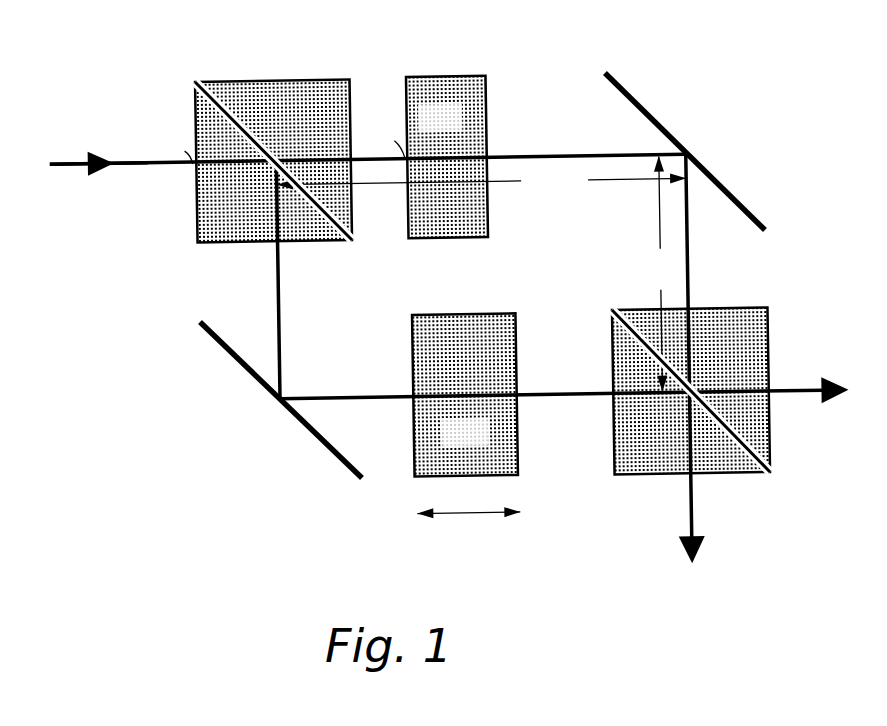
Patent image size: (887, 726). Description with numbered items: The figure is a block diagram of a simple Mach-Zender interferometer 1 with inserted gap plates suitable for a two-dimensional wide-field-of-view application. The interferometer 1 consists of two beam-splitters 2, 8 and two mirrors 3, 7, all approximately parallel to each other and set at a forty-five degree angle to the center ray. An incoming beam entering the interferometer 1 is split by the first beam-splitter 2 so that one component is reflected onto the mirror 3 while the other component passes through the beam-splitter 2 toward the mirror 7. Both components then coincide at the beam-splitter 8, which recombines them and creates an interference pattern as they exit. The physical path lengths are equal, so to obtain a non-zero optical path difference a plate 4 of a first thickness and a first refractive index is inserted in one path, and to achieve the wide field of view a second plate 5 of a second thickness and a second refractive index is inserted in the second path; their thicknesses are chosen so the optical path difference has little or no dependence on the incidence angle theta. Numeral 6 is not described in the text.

The Mach-Zender interferometer 1 is at (42, 452).
The first beam-splitter 2 is at (289, 74).
The mirror 3 is at (742, 197).
The plate 4 is at (493, 121).
The second plate 5 is at (528, 360).
The beam combiner 6 is at (747, 477).
The mirror 7 is at (315, 452).
The beam-splitter 8 is at (54, 152).